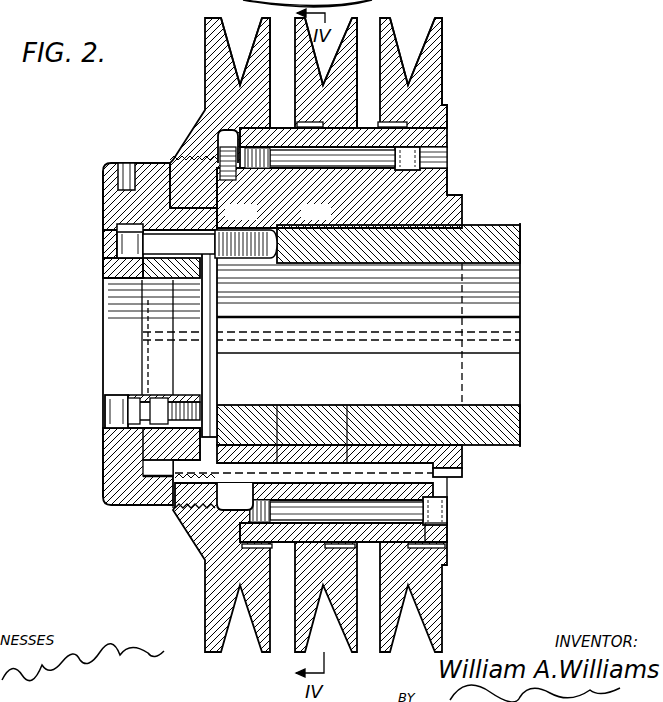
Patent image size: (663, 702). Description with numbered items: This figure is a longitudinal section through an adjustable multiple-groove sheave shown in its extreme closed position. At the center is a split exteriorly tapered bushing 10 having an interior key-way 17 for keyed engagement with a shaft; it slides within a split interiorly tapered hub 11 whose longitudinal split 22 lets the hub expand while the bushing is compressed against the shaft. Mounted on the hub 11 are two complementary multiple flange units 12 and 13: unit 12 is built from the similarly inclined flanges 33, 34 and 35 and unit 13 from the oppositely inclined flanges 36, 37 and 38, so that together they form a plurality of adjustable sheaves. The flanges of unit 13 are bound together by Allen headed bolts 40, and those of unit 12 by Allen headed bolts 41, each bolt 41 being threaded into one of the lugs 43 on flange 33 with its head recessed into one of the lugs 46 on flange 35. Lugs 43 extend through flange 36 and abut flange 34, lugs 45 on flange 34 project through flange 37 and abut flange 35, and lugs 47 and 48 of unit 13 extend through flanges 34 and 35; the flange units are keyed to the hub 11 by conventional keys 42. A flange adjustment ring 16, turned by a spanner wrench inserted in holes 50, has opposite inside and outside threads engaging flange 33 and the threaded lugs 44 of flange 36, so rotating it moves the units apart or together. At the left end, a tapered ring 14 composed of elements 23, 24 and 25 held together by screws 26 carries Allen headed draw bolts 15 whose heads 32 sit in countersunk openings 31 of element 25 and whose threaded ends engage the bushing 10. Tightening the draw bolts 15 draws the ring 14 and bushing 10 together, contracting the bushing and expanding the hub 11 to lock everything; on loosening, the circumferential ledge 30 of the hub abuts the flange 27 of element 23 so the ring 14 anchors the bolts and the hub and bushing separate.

The split exteriorly tapered bushing 10 is at (528, 450).
The split interiorly tapered hub 11 is at (456, 200).
The multiple flange unit 12 is at (200, 53).
The multiple flange unit 13 is at (450, 40).
The tapered ring 14 is at (97, 400).
The draw bolts 15 is at (208, 278).
The flange adjustment ring 16 is at (107, 490).
The key-way 17 is at (512, 316).
The longitudinally extending split 22 is at (212, 342).
The element of tapered ring 23 is at (182, 398).
The element of tapered ring 24 is at (159, 398).
The element of tapered ring 25 is at (136, 398).
The screws 26 is at (107, 411).
The flange 27 is at (206, 426).
The circumferential ledge 30 is at (172, 508).
The countersunk openings 31 is at (108, 250).
The Allen heads 32 is at (120, 228).
The flange 33 is at (205, 22).
The flange 34 is at (300, 46).
The flange 35 is at (382, 35).
The flange 36 is at (263, 31).
The flange 37 is at (382, 48).
The flange 38 is at (448, 23).
The Allen headed bolts 40 is at (421, 158).
The Allen headed bolts 41 is at (448, 506).
The keys 42 is at (462, 477).
The lugs 43 is at (277, 410).
The lugs 44 is at (241, 213).
The lugs 45 is at (347, 410).
The lugs 46 is at (447, 533).
The lugs 47 is at (316, 213).
The lugs 48 is at (448, 176).
The holes 50 is at (125, 172).